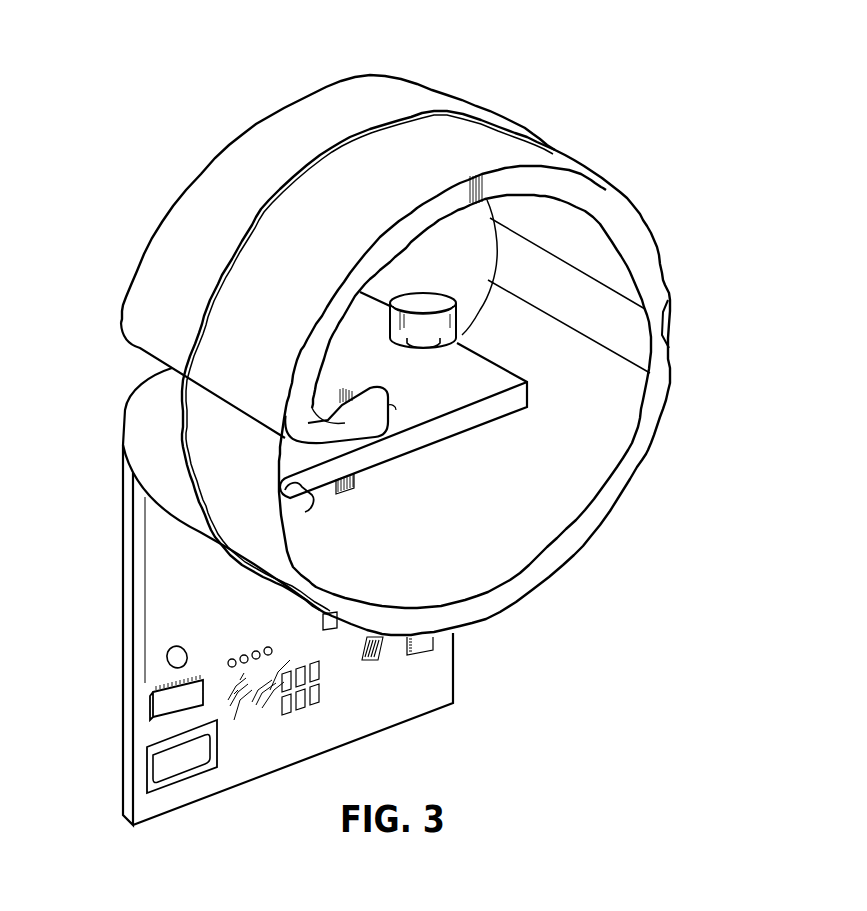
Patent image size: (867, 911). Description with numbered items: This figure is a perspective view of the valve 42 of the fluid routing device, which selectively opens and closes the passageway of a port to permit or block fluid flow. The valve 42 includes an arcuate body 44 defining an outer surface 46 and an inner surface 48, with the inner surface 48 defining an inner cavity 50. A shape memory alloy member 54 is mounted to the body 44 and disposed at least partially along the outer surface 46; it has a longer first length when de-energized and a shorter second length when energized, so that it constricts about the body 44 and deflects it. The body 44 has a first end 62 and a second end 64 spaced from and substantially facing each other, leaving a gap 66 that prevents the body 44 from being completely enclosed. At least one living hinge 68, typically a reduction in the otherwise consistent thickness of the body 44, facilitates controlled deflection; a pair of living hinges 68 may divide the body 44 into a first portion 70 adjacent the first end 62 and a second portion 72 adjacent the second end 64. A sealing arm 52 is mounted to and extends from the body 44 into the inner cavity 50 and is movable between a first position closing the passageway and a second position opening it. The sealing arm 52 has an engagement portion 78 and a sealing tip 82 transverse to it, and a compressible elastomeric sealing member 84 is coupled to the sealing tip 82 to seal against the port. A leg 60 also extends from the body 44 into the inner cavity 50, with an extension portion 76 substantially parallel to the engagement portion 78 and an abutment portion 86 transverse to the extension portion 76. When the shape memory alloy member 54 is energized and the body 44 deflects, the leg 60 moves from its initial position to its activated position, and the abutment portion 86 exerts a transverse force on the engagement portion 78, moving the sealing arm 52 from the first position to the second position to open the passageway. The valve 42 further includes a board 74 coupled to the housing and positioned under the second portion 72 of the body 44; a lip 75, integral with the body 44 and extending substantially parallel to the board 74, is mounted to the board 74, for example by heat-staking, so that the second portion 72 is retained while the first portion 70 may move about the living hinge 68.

The valve 42 is at (608, 103).
The body 44 is at (640, 205).
The outer surface 46 is at (293, 120).
The inner surface 48 is at (588, 458).
The inner cavity 50 is at (515, 537).
The sealing arm 52 is at (421, 458).
The shape memory alloy member 54 is at (262, 210).
The leg 60 is at (337, 395).
The first end 62 is at (256, 435).
The second end 64 is at (266, 483).
The gap 66 is at (266, 459).
The living hinge 68 is at (660, 333).
The first portion 70 is at (488, 193).
The second portion 72 is at (440, 617).
The board 74 is at (127, 650).
The lip 75 is at (157, 572).
The extension portion 76 is at (332, 417).
The engagement portion 78 is at (392, 452).
The sealing tip 82 is at (437, 351).
The sealing member 84 is at (442, 322).
The abutment portion 86 is at (380, 427).